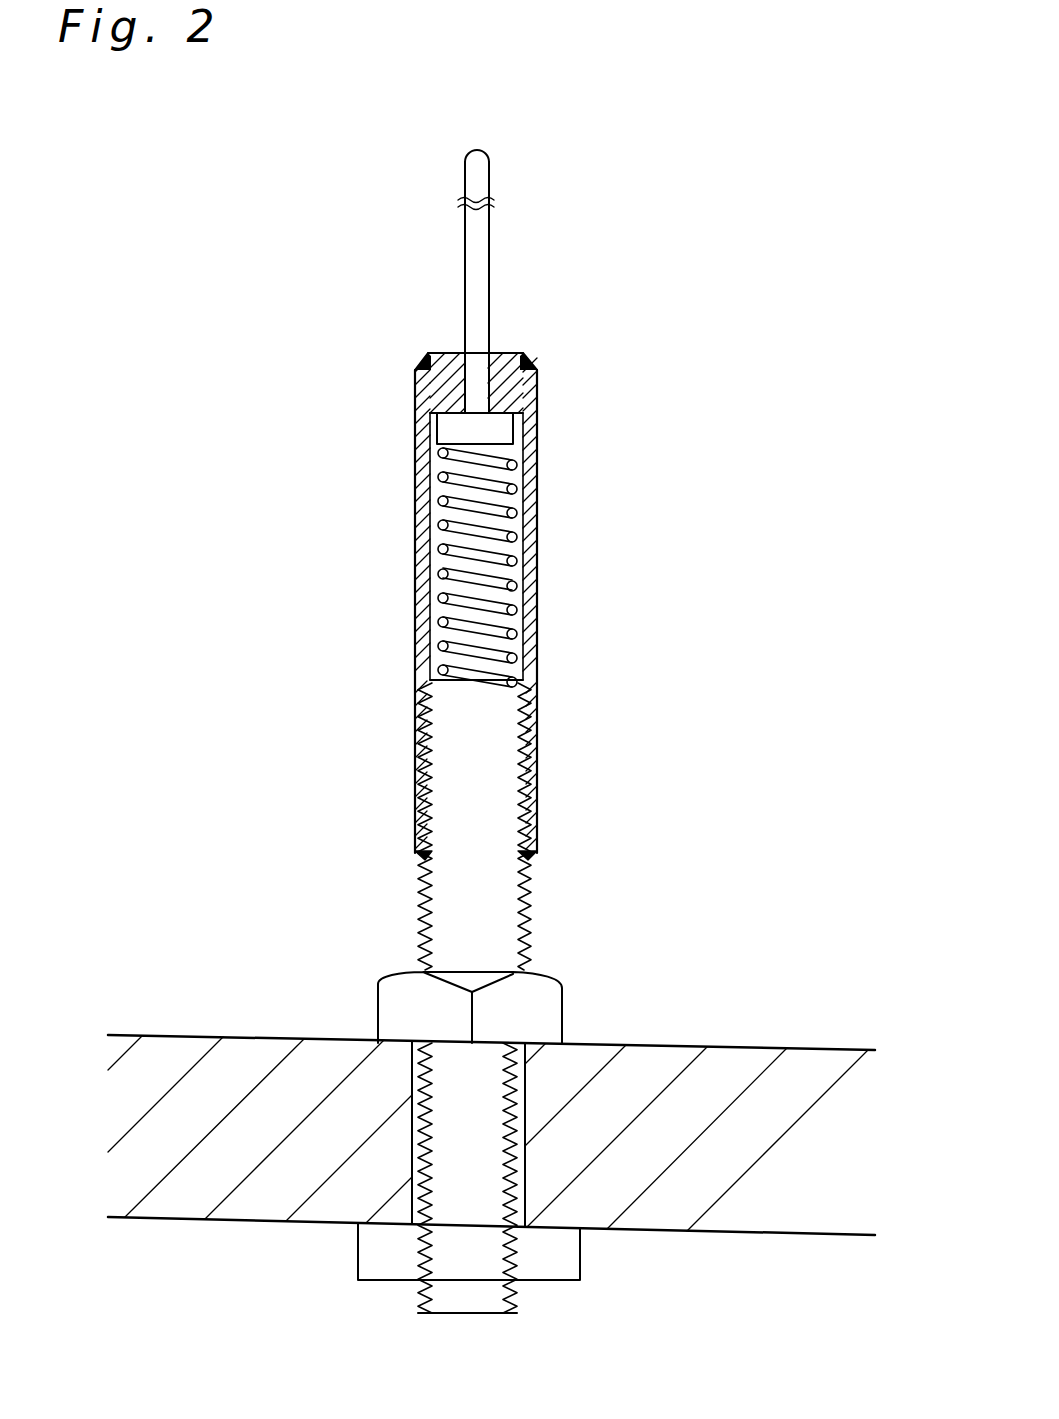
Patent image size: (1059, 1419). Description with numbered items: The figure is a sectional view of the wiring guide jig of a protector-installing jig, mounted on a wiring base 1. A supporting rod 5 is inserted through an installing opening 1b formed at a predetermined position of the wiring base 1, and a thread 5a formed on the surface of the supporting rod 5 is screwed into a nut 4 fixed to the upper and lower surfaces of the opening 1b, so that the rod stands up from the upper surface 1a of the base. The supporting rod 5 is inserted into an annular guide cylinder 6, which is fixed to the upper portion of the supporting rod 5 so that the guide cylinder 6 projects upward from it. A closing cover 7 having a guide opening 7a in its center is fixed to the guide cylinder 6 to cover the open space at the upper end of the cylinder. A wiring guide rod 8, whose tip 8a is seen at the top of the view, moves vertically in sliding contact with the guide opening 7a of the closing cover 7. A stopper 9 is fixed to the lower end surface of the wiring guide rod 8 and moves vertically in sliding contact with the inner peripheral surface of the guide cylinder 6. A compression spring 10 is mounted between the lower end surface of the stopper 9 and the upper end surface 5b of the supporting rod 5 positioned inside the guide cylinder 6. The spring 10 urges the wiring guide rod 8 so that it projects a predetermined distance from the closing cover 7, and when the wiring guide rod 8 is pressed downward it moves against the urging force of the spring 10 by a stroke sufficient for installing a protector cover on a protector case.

The wiring base 1 is at (198, 1178).
The upper surface 1a is at (238, 1037).
The installing opening 1b is at (525, 1137).
The nut 4 is at (553, 1005).
The supporting rod 5 is at (500, 806).
The thread 5a is at (518, 903).
The upper end surface 5b is at (458, 683).
The guide cylinder 6 is at (537, 688).
The closing cover 7 is at (505, 388).
The guide opening 7a is at (500, 353).
The wiring guide rod 8 is at (490, 265).
The pin tip 8a is at (491, 152).
The stopper 9 is at (498, 432).
The spring 10 is at (513, 536).